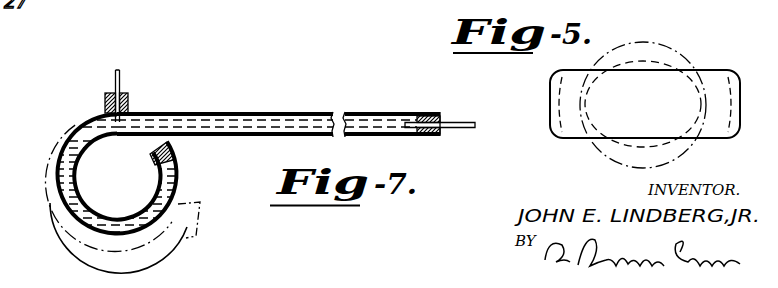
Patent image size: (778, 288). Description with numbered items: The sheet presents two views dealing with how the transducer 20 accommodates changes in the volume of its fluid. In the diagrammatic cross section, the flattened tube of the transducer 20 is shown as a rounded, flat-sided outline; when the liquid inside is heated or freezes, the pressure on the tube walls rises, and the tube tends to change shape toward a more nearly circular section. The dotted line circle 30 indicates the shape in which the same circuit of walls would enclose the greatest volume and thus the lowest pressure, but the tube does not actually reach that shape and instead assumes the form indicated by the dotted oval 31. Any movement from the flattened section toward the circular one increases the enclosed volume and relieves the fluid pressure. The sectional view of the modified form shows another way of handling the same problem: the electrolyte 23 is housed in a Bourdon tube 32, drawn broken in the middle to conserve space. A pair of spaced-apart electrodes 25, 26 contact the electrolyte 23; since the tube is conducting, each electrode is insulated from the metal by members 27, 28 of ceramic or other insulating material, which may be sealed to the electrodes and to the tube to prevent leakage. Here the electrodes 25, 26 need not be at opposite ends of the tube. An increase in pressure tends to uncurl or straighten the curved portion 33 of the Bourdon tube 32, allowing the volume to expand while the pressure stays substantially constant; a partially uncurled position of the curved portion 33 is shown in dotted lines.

In FIG. 5, the transducer 20 is at (565, 138).
In FIG. 7, the electrolyte 23 is at (228, 113).
In FIG. 7, the electrode 25 is at (115, 76).
In FIG. 7, the electrode 26 is at (412, 118).
In FIG. 7, the insulating member 27 is at (128, 101).
In FIG. 7, the insulating member 28 is at (440, 122).
In FIG. 5, the dotted line circle 30 is at (684, 50).
In FIG. 5, the dotted oval 31 is at (641, 62).
In FIG. 7, the Bourdon tube 32 is at (348, 112).
In FIG. 7, the curved portion 33 is at (175, 160).